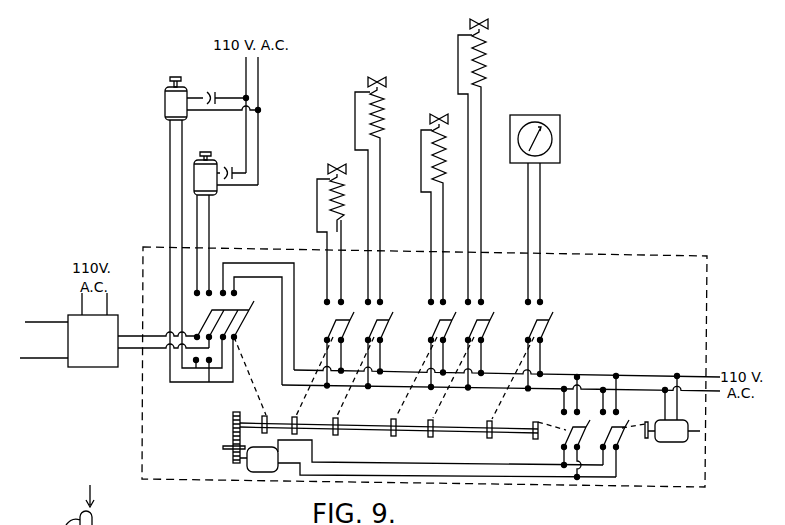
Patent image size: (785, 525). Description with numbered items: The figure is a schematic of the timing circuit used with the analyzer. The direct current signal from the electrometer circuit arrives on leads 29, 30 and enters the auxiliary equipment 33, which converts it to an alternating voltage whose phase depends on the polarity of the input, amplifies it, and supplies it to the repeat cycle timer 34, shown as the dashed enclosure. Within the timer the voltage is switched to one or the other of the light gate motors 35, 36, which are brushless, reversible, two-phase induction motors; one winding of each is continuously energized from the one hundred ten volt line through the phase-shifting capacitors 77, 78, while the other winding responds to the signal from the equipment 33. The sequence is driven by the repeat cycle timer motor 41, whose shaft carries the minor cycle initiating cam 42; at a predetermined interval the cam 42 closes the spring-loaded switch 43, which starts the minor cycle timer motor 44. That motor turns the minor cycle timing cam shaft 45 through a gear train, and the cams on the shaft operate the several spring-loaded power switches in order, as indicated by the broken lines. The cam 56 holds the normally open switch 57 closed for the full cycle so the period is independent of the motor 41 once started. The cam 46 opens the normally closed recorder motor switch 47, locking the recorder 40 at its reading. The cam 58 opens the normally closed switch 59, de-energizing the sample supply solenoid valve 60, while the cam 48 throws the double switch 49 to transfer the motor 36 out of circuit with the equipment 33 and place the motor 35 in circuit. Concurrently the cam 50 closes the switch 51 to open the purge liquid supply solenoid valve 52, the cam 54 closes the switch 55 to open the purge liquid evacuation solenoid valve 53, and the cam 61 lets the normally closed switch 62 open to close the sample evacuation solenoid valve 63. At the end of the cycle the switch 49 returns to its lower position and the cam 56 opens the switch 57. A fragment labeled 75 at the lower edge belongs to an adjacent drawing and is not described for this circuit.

The lead 29 is at (52, 361).
The lead 30 is at (50, 320).
The auxiliary equipment 33 is at (96, 368).
The repeat cycle timer 34 is at (645, 265).
The light gate motor 35 is at (217, 192).
The light gate motor 36 is at (165, 103).
The recorder 40 is at (562, 141).
The repeat cycle timer motor 41 is at (700, 431).
The minor cycle initiating cam 42 is at (647, 441).
The minor cycle initiating springloaded switch 43 is at (619, 428).
The minor cycle timer motor 44 is at (253, 476).
The minor cycle timing cam shaft 45 is at (413, 432).
The minor cycle cam 46 is at (486, 422).
The recorder motor switch 47 is at (549, 322).
The minor cycle cam 48 is at (258, 414).
The double switch 49 is at (242, 324).
The minor cycle cam 50 is at (300, 418).
The switch 51 is at (332, 330).
The purge liquid supply solenoid valve 52 is at (331, 162).
The purge liquid evacuation solenoid valve 53 is at (373, 74).
The minor cycle cam 54 is at (340, 420).
The switch 55 is at (383, 329).
The minor cycle cam 56 is at (532, 422).
The spring-loaded switch 57 is at (570, 430).
The minor cycle cam 58 is at (428, 422).
The switch 59 is at (485, 331).
The sample supply solenoid valve 60 is at (497, 24).
The minor cycle cam 61 is at (401, 386).
The switch 62 is at (439, 330).
The sample evacuation solenoid valve 63 is at (436, 118).
The element 75 is at (100, 521).
The phase-shifting capacitor 77 is at (230, 172).
The phase-shifting capacitor 78 is at (208, 97).